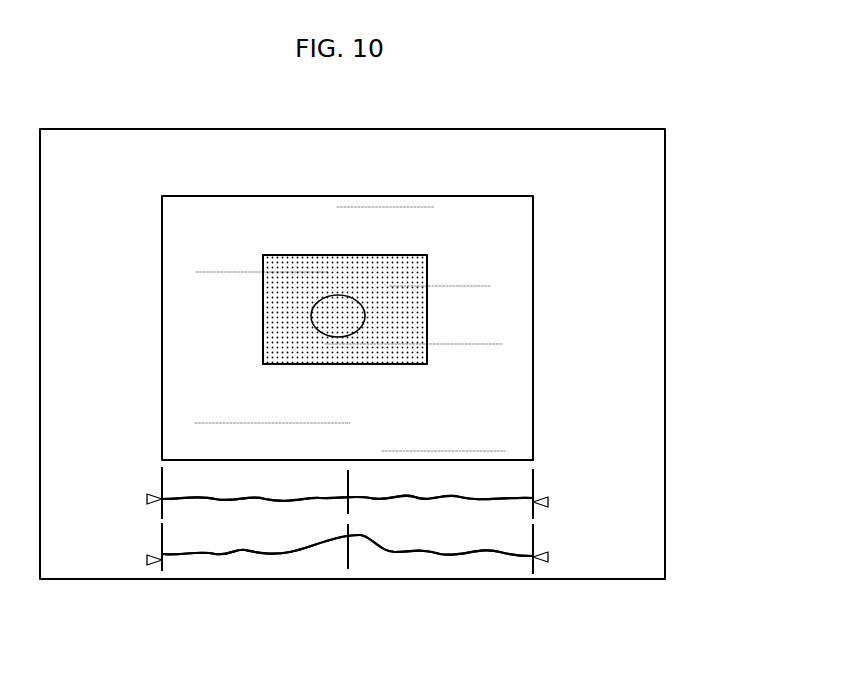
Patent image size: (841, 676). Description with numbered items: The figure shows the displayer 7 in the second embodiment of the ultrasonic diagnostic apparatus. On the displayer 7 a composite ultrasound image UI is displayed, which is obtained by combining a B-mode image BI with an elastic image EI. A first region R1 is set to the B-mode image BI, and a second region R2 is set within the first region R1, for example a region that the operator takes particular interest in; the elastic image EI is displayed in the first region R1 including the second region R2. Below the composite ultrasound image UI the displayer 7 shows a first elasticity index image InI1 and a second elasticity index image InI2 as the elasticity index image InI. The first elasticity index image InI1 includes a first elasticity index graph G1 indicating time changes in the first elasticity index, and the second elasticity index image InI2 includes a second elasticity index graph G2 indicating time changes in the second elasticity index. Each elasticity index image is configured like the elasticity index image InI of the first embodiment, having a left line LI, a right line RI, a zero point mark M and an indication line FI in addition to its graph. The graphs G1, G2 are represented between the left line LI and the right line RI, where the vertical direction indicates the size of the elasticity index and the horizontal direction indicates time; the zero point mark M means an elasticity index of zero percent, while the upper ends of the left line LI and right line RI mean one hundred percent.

The displayer 7 is at (665, 338).
The composite ultrasound image UI is at (305, 192).
The B-mode image BI is at (514, 256).
The first region R1 is at (275, 255).
The second region R2 is at (312, 318).
The elastic image EI is at (400, 273).
The elasticity index image InI is at (568, 458).
The first elasticity index image InI1 is at (563, 482).
The second elasticity index image InI2 is at (563, 541).
The zero point mark M is at (147, 500).
The left line LI is at (162, 486).
The right line RI is at (534, 483).
The first elasticity index graph G1 is at (183, 499).
The second elasticity index graph G2 is at (253, 556).
The indication line FI is at (351, 509).